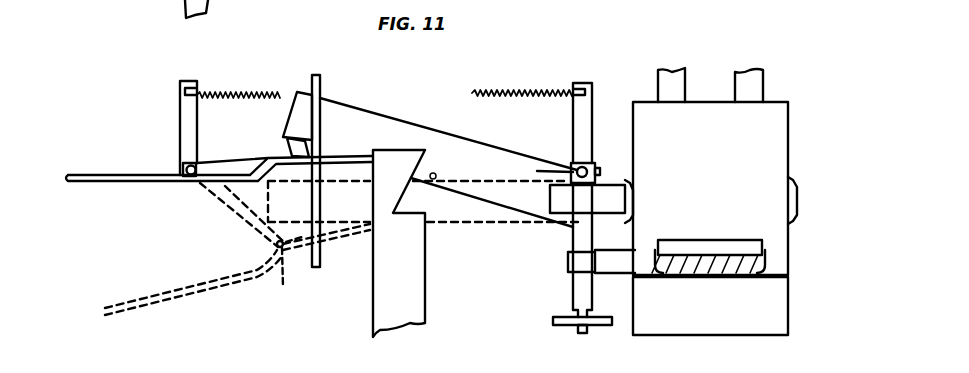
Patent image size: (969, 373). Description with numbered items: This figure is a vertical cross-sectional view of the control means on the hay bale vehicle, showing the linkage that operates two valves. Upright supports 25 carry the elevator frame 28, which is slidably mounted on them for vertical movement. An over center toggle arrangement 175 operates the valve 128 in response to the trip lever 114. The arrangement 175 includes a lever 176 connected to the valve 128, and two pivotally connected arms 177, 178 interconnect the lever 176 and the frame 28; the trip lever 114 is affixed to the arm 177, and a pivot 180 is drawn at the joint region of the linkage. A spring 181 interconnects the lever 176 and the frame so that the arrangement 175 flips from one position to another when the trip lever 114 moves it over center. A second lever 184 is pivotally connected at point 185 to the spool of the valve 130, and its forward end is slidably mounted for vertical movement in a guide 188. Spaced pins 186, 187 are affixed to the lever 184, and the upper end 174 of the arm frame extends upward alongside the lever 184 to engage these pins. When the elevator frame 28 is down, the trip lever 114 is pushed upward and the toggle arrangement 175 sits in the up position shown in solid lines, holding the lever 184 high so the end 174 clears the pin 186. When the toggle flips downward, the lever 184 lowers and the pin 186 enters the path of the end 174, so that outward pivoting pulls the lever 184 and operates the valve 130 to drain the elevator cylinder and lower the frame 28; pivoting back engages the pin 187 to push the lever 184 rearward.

The upright supports 25 is at (139, 0).
The elevator frame 28 is at (186, 118).
The trip lever 114 is at (137, 184).
The valve 128 is at (768, 305).
The valve 130 is at (778, 139).
The upper end 174 is at (418, 284).
The over center toggle arrangement 175 is at (326, 155).
The lever 176 is at (587, 140).
The arm 177 is at (545, 171).
The arm 178 is at (229, 163).
The pivot point 180 is at (292, 271).
The spring 181 is at (508, 93).
The lever 184 is at (532, 208).
The point 185 is at (568, 199).
The pin 186 is at (372, 122).
The pin 187 is at (437, 174).
The guide 188 is at (320, 87).